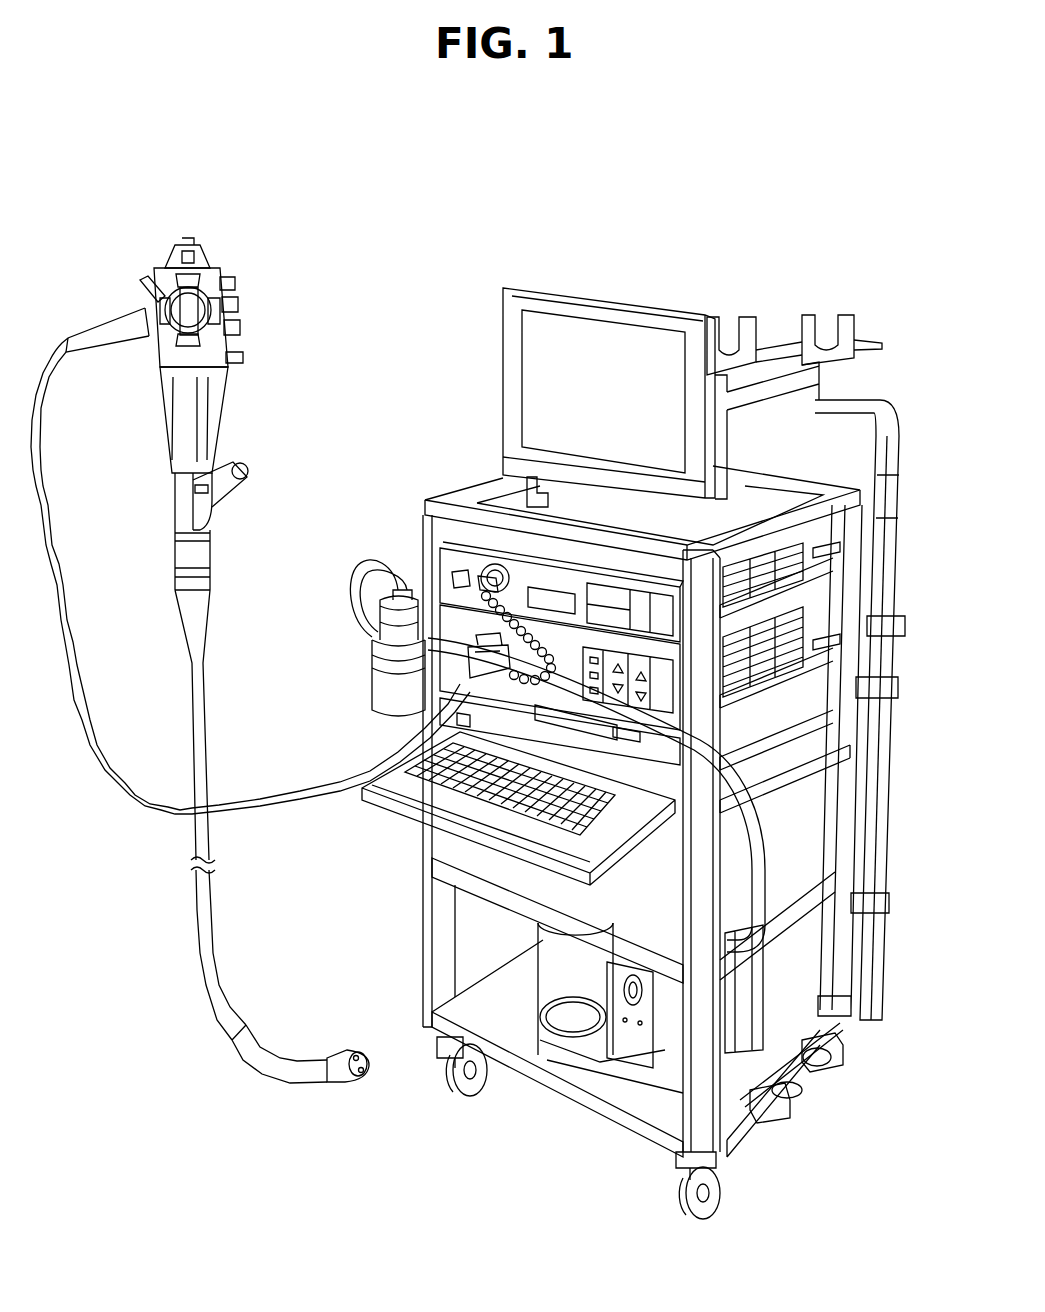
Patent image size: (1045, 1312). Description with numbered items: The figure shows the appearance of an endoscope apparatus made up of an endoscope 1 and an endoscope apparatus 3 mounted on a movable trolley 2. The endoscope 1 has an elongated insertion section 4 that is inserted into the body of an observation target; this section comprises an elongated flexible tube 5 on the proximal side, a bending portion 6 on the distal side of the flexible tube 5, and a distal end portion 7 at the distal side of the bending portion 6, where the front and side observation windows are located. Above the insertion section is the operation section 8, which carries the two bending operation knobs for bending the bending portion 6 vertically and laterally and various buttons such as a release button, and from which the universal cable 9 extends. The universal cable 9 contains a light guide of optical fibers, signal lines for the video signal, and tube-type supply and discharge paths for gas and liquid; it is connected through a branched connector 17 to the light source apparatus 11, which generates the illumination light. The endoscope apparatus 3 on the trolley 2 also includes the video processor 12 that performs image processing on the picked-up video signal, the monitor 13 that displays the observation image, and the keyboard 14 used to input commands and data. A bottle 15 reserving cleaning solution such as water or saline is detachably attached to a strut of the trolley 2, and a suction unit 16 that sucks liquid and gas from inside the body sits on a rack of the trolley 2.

The endoscope 1 is at (370, 315).
The movable trolley 2 is at (888, 301).
The endoscope apparatus 3 is at (912, 388).
The insertion section 4 is at (338, 1182).
The flexible tube 5 is at (228, 1030).
The bending portion 6 is at (293, 1077).
The distal end portion 7 is at (335, 1083).
The operation section 8 is at (209, 273).
The universal cable 9 is at (62, 605).
The light source apparatus 11 is at (450, 620).
The video processor 12 is at (447, 573).
The monitor 13 is at (545, 402).
The keyboard 14 is at (425, 800).
The bottle 15 is at (373, 695).
The suction unit 16 is at (621, 1043).
The connector 17 is at (373, 663).